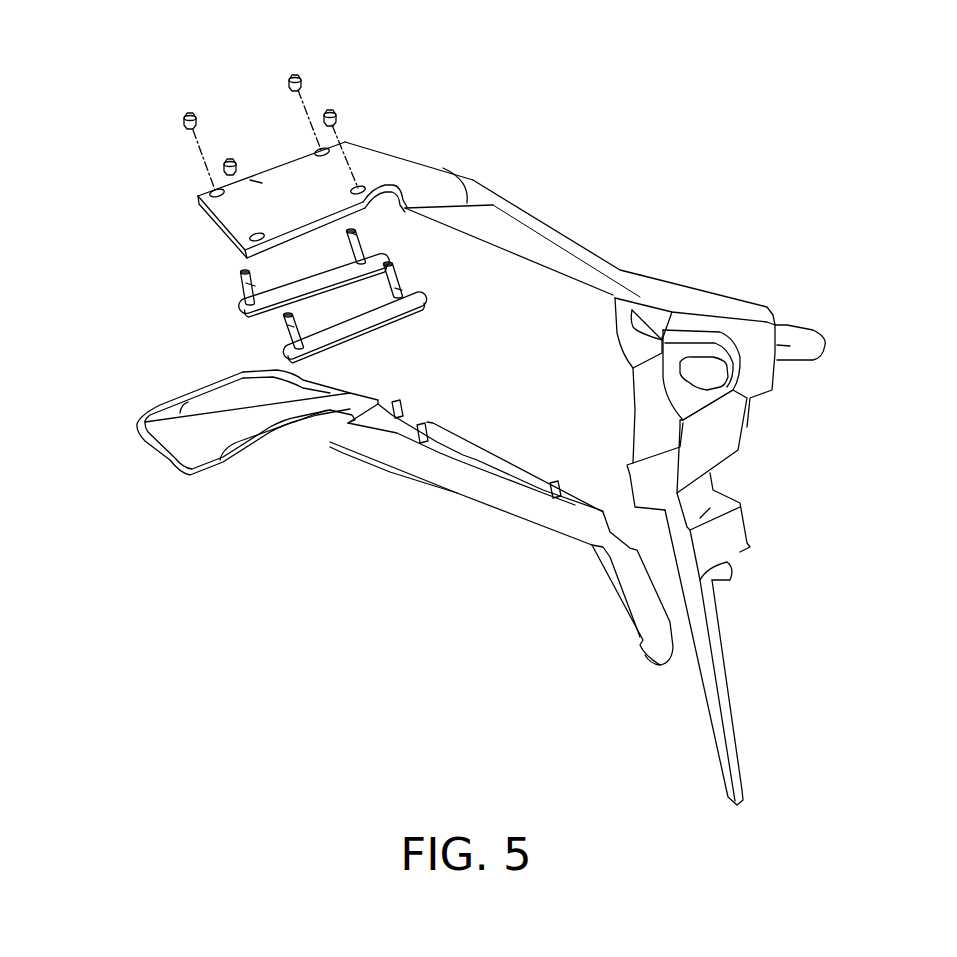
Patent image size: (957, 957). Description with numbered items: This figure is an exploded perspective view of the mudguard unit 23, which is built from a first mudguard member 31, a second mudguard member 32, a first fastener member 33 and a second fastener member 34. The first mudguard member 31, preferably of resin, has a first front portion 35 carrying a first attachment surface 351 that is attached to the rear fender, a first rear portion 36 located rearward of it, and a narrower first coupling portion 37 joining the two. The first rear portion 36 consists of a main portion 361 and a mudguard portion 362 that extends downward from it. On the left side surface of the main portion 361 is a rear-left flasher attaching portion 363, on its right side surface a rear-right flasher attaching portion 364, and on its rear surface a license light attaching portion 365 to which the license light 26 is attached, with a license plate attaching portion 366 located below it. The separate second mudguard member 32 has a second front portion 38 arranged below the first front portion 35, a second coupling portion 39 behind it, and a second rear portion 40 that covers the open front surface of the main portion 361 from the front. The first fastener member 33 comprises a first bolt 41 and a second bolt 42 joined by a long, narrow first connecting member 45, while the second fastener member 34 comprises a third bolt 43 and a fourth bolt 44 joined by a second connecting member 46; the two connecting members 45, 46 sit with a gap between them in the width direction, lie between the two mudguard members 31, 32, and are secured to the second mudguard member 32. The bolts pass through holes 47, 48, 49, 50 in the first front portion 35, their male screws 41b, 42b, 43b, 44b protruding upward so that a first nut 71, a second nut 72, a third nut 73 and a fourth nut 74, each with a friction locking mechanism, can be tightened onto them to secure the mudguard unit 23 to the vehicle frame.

The mudguard unit 23 is at (707, 143).
The license light 26 is at (800, 337).
The first mudguard member 31 is at (492, 203).
The second mudguard member 32 is at (405, 520).
The first fastener member 33 is at (321, 302).
The second fastener member 34 is at (306, 220).
The first front portion 35 is at (250, 159).
The first rear portion 36 is at (715, 504).
The first coupling portion 37 is at (577, 250).
The second front portion 38 is at (279, 456).
The second coupling portion 39 is at (469, 491).
The second rear portion 40 is at (612, 595).
The first bolt 41 is at (283, 341).
The male screw 41b is at (287, 323).
The second bolt 42 is at (404, 271).
The male screw 42b is at (412, 282).
The third bolt 43 is at (236, 282).
The male screw 43b is at (263, 282).
The fourth bolt 44 is at (367, 238).
The male screw 44b is at (356, 246).
The first connecting member 45 is at (364, 330).
The second connecting member 46 is at (302, 282).
The hole 47 is at (248, 236).
The hole 48 is at (375, 172).
The hole 49 is at (210, 189).
The hole 50 is at (318, 147).
The first nut 71 is at (257, 236).
The second nut 72 is at (338, 116).
The third nut 73 is at (184, 114).
The fourth nut 74 is at (304, 82).
The first attachment surface 351 is at (252, 184).
The main portion 361 is at (757, 387).
The mudguard portion 362 is at (720, 622).
The rear-left flasher attaching portion 363 is at (680, 392).
The rear-right flasher attaching portion 364 is at (613, 333).
The license light attaching portion 365 is at (786, 347).
The license plate attaching portion 366 is at (749, 437).